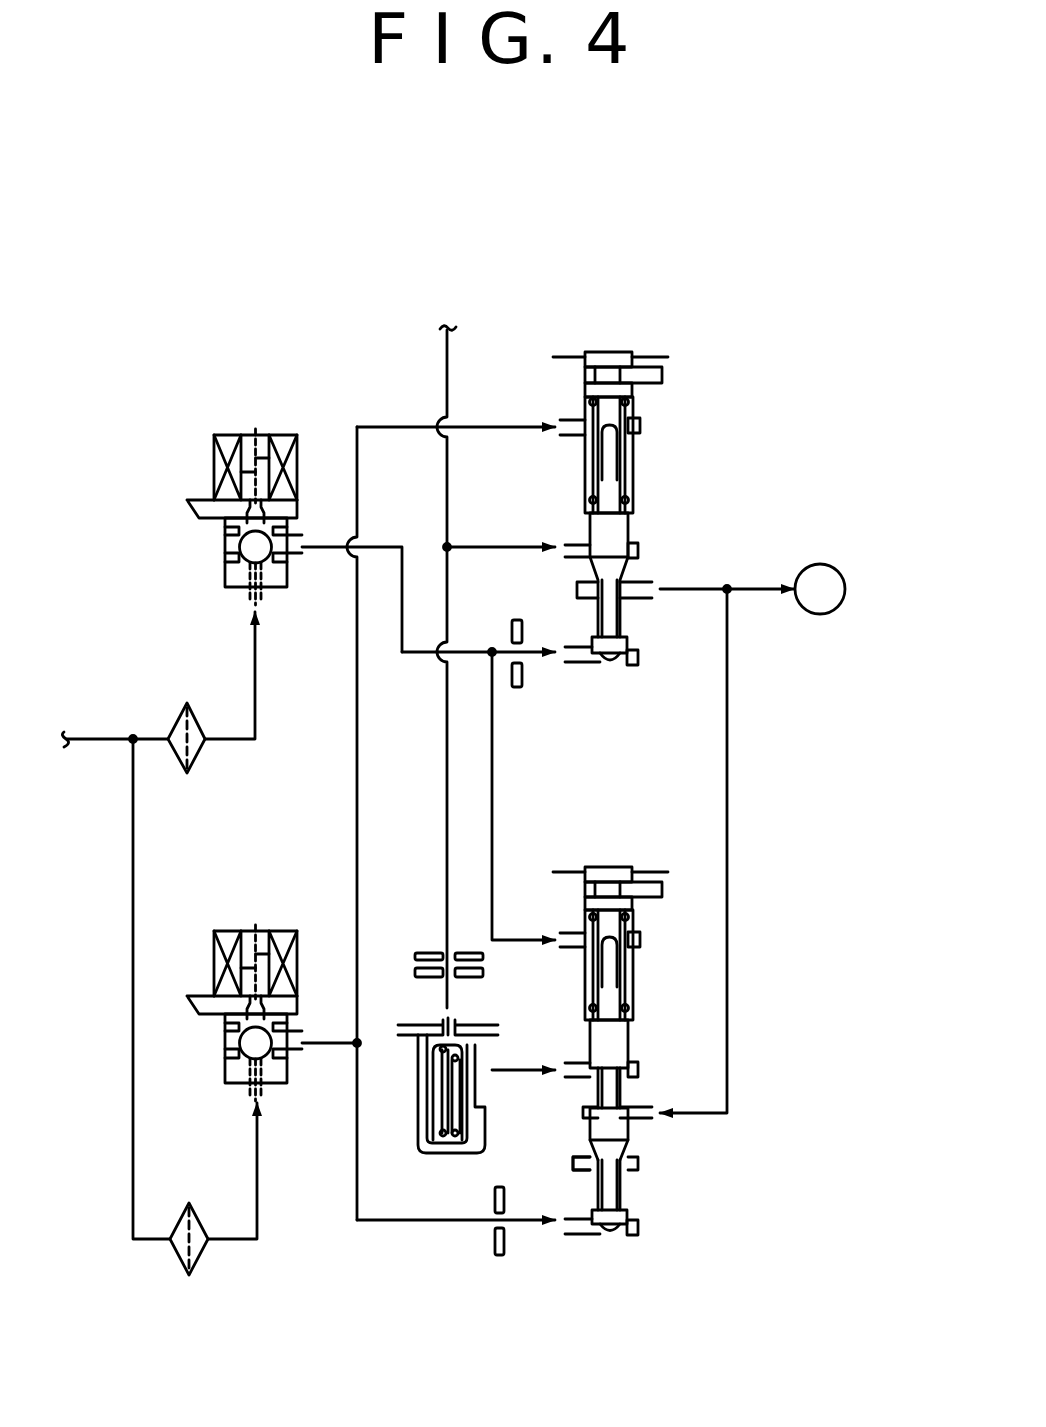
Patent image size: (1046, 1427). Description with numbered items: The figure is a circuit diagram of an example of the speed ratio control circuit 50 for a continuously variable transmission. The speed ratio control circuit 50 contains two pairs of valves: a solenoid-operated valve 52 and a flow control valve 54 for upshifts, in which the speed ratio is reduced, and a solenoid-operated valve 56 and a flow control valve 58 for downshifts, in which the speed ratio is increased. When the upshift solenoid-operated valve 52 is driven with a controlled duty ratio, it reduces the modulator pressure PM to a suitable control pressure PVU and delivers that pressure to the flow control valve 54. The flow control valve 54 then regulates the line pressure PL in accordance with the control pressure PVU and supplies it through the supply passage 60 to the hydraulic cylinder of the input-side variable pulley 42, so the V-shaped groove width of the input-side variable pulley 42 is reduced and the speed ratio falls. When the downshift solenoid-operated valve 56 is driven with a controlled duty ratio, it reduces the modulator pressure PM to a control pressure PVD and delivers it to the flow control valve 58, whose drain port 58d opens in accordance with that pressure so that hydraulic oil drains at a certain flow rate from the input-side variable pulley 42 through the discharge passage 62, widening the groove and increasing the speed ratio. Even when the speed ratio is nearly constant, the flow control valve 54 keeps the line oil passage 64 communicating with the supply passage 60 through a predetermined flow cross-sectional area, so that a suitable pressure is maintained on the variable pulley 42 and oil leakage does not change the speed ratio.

The speed ratio control circuit 50 is at (692, 283).
The solenoid-operated valve 52 is at (184, 404).
The flow control valve 54 is at (531, 365).
The solenoid-operated valve 56 is at (291, 888).
The flow control valve 58 is at (651, 852).
The drain port 58d is at (576, 1158).
The supply passage 60 is at (678, 589).
The discharge passage 62 is at (728, 950).
The line oil passage 64 is at (449, 513).
The input-side variable pulley 42 is at (817, 580).